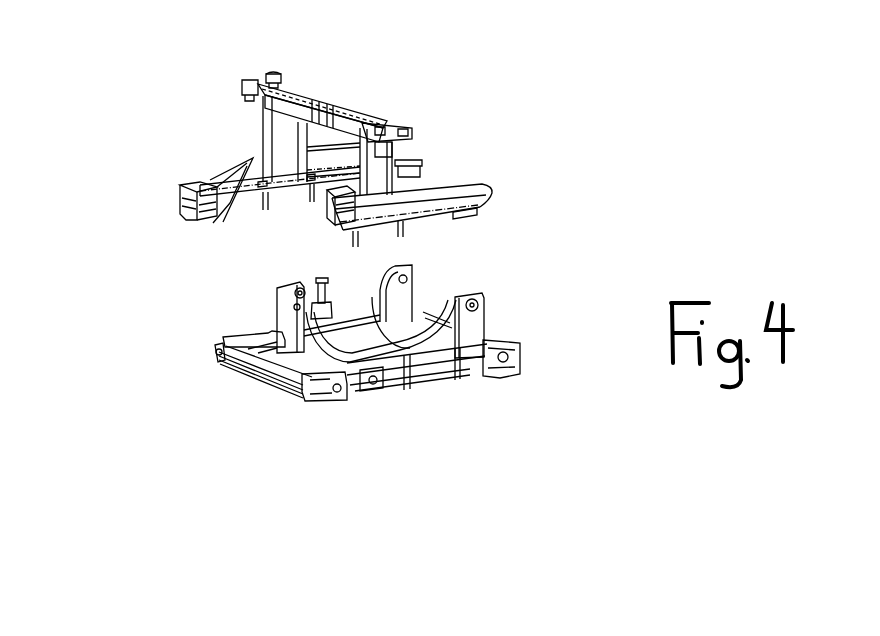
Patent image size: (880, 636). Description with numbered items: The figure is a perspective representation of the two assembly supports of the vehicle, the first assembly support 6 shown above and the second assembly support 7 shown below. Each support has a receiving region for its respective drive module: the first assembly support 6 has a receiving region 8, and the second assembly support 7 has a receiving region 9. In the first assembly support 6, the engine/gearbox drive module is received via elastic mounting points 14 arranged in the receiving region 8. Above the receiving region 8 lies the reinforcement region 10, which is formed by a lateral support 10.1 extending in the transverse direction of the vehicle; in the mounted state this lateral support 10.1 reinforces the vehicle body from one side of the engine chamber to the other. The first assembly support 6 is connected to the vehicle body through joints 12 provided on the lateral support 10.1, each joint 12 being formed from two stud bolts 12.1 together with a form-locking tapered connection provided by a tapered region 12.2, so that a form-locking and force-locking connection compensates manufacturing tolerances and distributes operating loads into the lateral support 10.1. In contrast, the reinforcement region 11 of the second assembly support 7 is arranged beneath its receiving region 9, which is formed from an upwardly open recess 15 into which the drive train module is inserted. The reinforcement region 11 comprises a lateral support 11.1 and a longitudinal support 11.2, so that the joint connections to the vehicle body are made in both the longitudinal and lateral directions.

The first assembly support 6 is at (166, 136).
The second assembly support 7 is at (165, 325).
The receiving region 8 is at (505, 197).
The receiving region 9 is at (508, 305).
The reinforcement region 10 is at (420, 136).
The lateral support 10.1 is at (353, 115).
The reinforcement region 11 is at (538, 358).
The lateral support 11.1 is at (272, 386).
The longitudinal support 11.2 is at (433, 380).
The joints 12 is at (264, 68).
The stud bolts 12.1 is at (253, 78).
The tapered region 12.2 is at (289, 80).
The elastic mounting points 14 is at (180, 190).
The recess 15 is at (440, 300).